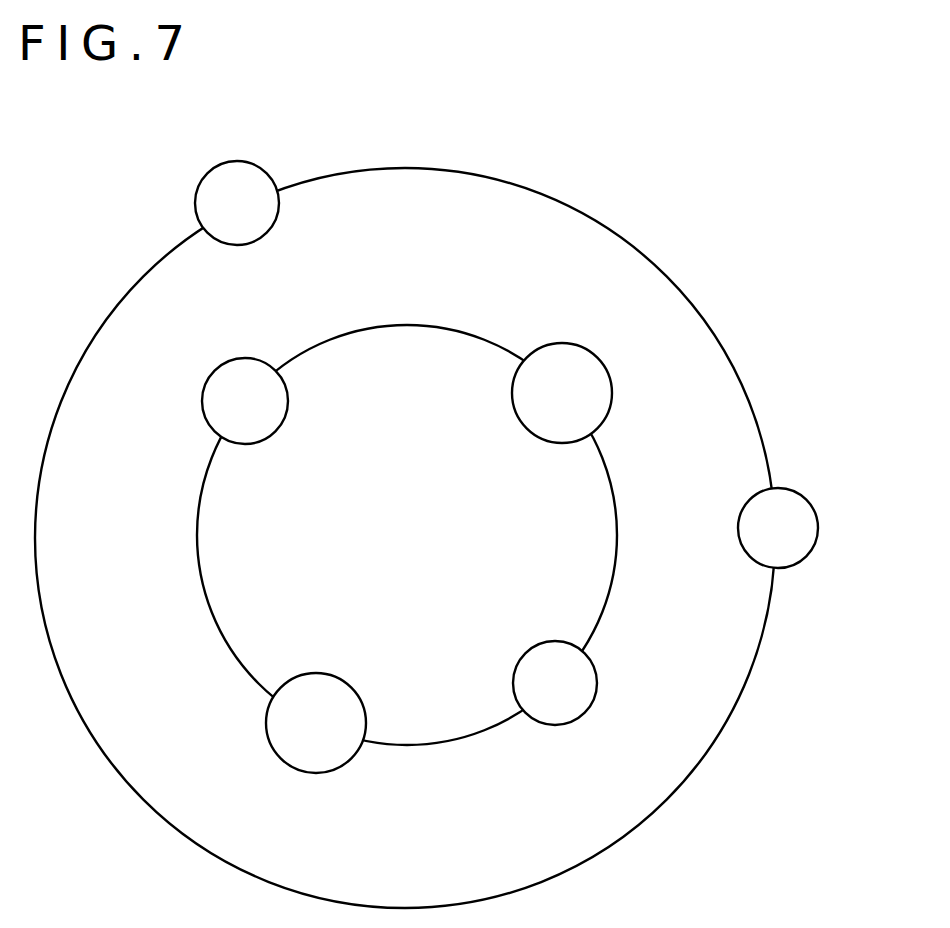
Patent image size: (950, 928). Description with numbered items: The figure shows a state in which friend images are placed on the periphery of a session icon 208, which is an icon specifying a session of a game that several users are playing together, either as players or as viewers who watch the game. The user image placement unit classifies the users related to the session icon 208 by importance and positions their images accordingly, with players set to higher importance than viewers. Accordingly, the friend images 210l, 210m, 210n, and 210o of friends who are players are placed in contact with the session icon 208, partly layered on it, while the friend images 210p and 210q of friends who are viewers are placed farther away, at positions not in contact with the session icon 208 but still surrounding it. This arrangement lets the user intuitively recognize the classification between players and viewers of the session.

The session icon 208 is at (198, 533).
The friend image 210p is at (237, 161).
The friend image 210m is at (245, 358).
The friend image 210n is at (562, 343).
The friend image 210q is at (818, 532).
The friend image 210o is at (555, 726).
The friend image 210l is at (313, 774).